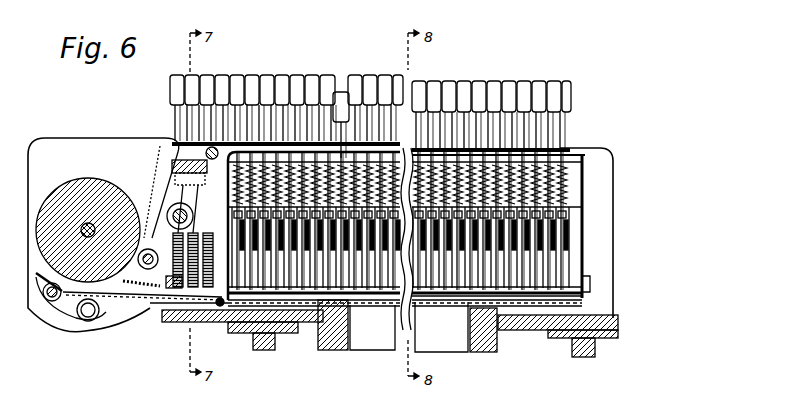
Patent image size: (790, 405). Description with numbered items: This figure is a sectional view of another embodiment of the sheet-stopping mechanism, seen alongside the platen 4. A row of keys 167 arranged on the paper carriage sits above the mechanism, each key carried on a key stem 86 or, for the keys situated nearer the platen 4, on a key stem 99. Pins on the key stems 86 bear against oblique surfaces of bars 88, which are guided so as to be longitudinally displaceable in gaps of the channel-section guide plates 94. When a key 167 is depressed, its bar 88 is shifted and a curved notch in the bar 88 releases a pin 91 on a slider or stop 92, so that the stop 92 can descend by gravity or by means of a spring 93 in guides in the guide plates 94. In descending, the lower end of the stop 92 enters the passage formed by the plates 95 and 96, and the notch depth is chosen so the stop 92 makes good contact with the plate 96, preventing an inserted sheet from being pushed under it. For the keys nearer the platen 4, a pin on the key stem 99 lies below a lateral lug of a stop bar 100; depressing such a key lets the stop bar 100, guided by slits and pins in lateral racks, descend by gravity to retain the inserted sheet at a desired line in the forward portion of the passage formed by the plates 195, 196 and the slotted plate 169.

The platen 4 is at (63, 193).
The key stem 86 is at (566, 138).
The bar 88 is at (569, 230).
The pin 91 is at (568, 215).
The stop 92 is at (383, 248).
The spring 93 is at (577, 196).
The guide plate 94 is at (569, 288).
The plate 95 is at (548, 294).
The plate 96 is at (452, 303).
The key stem 99 is at (176, 120).
The stop bar 100 is at (166, 218).
The key 167 is at (498, 95).
The slotted plate 169 is at (171, 290).
The plate 195 is at (145, 288).
The plate 196 is at (113, 296).